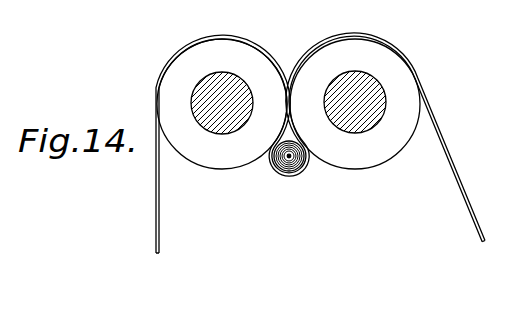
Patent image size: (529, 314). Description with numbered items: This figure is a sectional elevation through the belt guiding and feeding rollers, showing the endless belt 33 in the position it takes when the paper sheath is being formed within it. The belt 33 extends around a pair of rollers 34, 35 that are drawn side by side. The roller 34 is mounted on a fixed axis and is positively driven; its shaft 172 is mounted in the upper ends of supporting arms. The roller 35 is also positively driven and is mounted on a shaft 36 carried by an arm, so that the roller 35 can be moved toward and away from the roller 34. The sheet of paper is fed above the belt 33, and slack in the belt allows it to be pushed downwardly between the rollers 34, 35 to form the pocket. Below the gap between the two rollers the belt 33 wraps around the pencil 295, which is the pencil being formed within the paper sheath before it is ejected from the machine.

The endless belt 33 is at (430, 107).
The roller 34 is at (348, 53).
The roller 35 is at (205, 57).
The shaft 36 is at (227, 85).
The shaft 172 is at (367, 90).
The pencil 295 is at (288, 167).